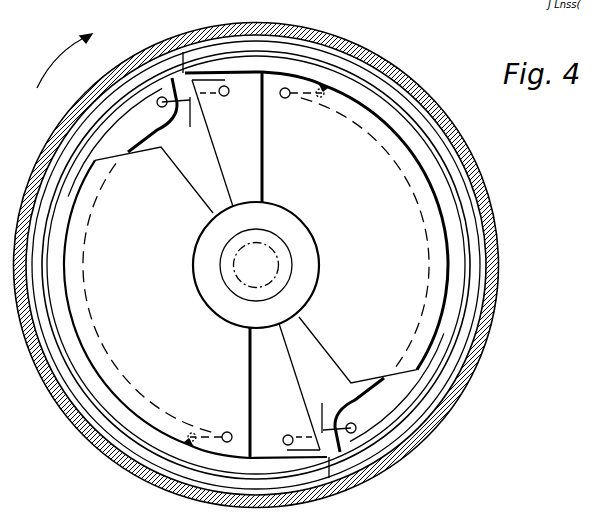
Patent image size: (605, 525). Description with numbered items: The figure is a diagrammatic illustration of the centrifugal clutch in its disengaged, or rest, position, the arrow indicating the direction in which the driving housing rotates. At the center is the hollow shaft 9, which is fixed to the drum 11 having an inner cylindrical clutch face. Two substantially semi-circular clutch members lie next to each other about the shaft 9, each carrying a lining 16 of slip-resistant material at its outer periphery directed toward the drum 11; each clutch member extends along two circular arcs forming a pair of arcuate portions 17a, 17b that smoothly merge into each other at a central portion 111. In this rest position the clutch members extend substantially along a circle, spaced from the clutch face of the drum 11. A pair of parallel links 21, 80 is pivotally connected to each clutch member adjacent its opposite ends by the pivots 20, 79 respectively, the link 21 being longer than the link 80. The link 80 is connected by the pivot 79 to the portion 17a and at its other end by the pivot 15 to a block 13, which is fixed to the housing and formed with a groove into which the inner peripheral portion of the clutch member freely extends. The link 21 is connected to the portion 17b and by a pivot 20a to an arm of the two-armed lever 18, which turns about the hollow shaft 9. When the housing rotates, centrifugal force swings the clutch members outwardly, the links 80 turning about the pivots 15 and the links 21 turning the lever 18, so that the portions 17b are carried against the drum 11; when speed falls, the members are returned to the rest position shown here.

The hollow shaft 9 is at (277, 246).
The drum 11 is at (54, 142).
The central portion 111 is at (480, 176).
The block 13 is at (256, 265).
The pivot 15 is at (285, 88).
The lining 16 is at (410, 106).
The arcuate portion 17a is at (362, 97).
The arcuate portion 17b is at (256, 265).
The two-armed lever 18 is at (256, 265).
The pivot 20 is at (159, 98).
The pivot 20a is at (224, 86).
The link 21 is at (343, 500).
The pivot 79 is at (322, 84).
The link 80 is at (316, 90).